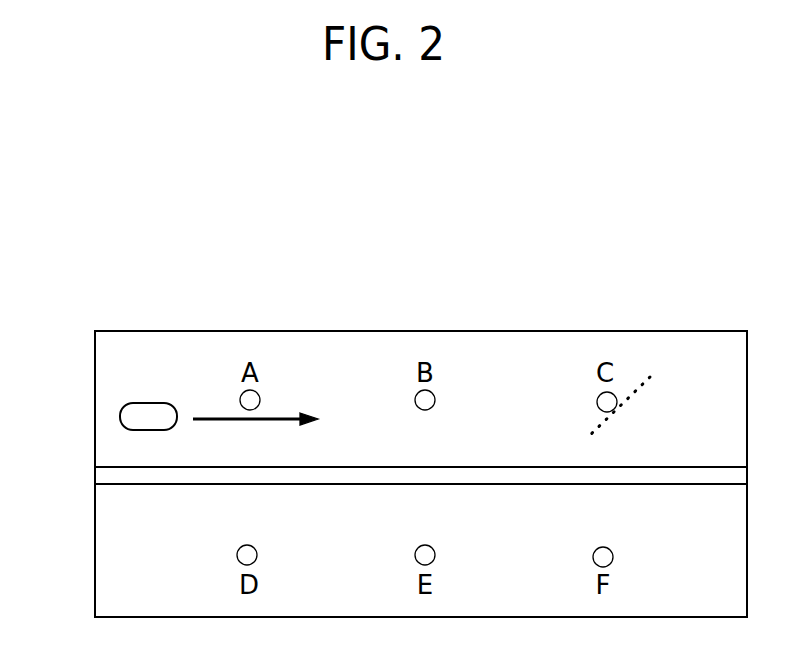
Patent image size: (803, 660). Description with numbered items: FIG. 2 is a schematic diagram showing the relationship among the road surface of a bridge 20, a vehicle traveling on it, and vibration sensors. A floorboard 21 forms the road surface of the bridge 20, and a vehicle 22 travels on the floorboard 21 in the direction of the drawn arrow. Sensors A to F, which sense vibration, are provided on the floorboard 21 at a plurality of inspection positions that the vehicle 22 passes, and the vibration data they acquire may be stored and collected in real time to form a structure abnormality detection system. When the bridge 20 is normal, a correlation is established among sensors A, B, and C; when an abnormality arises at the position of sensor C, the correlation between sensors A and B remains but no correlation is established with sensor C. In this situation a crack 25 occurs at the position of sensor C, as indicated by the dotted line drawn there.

The bridge 20 is at (203, 309).
The floorboard 21 is at (95, 567).
The vehicle 22 is at (120, 421).
The crack 25 is at (641, 387).